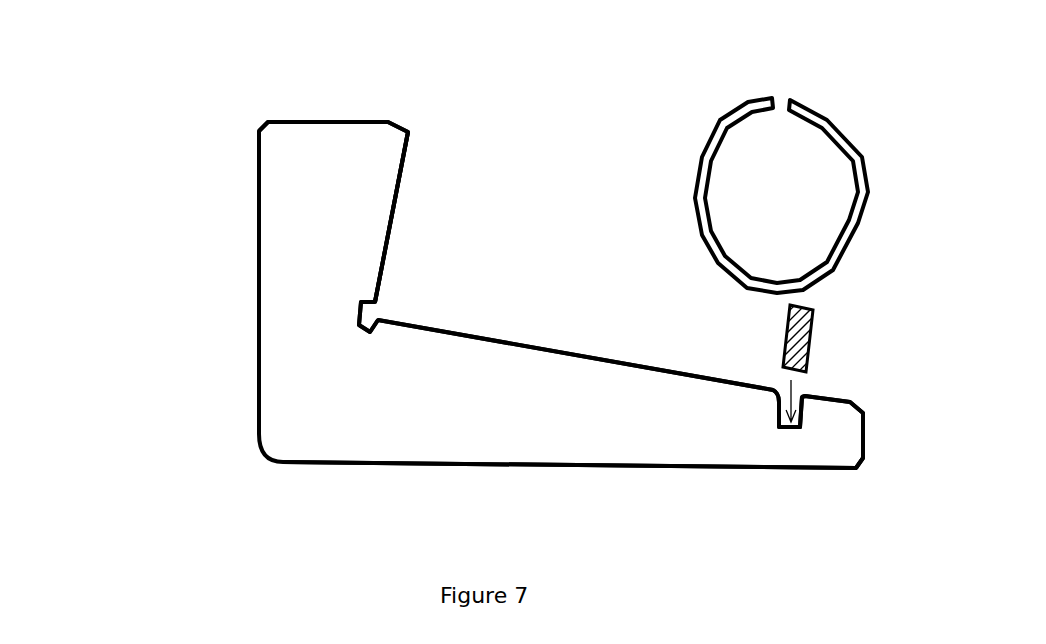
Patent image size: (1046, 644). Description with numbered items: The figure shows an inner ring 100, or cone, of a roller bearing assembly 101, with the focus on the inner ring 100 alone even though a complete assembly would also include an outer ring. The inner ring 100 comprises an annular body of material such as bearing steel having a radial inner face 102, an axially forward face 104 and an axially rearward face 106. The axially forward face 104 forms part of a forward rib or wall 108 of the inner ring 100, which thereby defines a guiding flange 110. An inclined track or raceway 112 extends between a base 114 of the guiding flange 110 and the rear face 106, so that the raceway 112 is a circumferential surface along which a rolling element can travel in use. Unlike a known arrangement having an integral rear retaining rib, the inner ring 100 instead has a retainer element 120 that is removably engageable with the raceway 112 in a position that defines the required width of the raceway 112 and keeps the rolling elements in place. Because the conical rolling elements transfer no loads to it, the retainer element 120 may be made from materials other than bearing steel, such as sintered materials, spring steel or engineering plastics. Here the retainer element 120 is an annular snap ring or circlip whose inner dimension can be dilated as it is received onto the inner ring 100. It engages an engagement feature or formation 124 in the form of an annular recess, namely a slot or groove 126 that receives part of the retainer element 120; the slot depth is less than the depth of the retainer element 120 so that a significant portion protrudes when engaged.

The inner ring 100 is at (392, 446).
The roller bearing assembly 101 is at (154, 68).
The radial inner face 102 is at (453, 463).
The axially forward face 104 is at (257, 307).
The axially rearward face 106 is at (863, 433).
The forward rib or wall 108 is at (331, 211).
The guiding flange 110 is at (393, 193).
The raceway 112 is at (453, 325).
The base of the guiding flange 114 is at (389, 302).
The retainer element 120 is at (698, 172).
The engagement feature or formation 124 is at (767, 443).
The slot or groove 126 is at (785, 430).